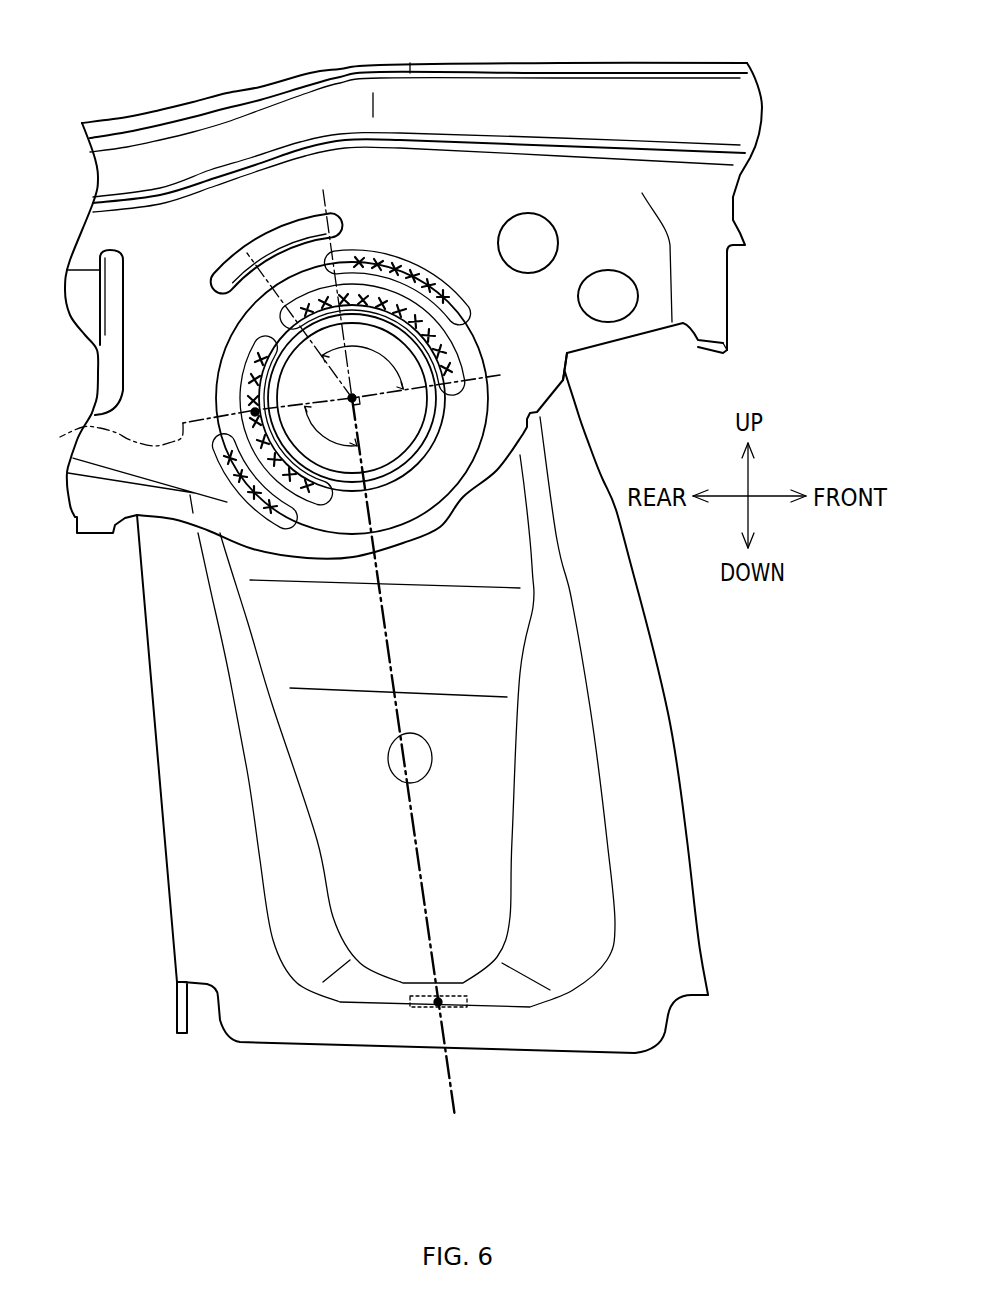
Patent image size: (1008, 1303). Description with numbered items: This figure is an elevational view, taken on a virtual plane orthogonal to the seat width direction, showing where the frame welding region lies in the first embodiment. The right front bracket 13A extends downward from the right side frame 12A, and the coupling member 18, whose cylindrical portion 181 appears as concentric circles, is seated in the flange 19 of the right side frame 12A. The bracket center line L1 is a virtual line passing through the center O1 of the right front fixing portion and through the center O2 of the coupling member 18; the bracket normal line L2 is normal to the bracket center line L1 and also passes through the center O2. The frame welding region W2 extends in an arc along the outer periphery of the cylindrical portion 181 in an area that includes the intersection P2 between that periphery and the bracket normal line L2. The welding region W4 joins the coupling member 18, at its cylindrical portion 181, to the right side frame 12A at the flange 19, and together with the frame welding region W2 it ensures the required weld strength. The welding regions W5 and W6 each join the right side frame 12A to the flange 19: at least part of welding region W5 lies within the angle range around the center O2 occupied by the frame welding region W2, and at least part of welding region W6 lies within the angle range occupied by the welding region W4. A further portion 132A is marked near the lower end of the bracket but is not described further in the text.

The right side frame 12A is at (278, 82).
The right front bracket 13A is at (668, 713).
The flange 19 is at (465, 474).
The coupling member 18 is at (232, 253).
The cylindrical portion 181 is at (236, 260).
The welding region W6 is at (405, 247).
The welding region W5 is at (240, 513).
The welding region W4 is at (447, 330).
The frame welding region W2 is at (243, 346).
The bracket center line L1 is at (378, 717).
The bracket normal line L2 is at (266, 413).
The center of the coupling member O2 is at (352, 398).
The center of the right front fixing portion O1 is at (440, 1003).
The intersection P2 is at (255, 410).
The lower end portion 132A is at (417, 1005).